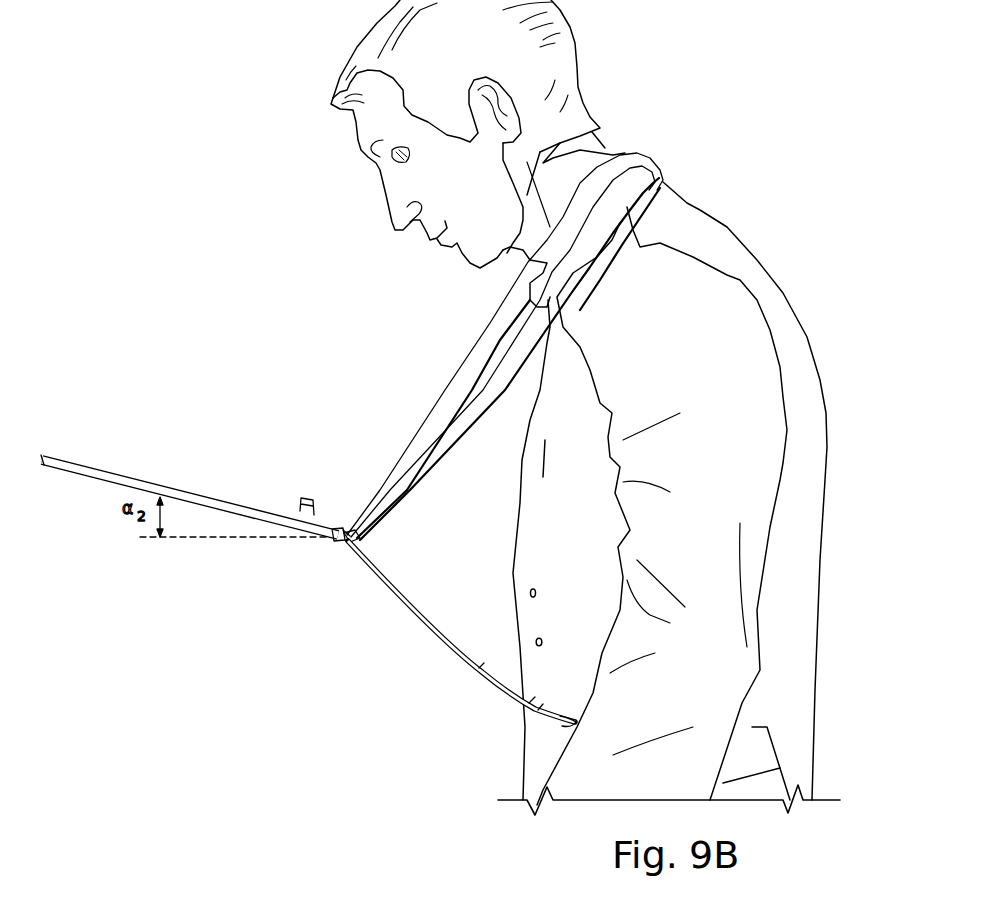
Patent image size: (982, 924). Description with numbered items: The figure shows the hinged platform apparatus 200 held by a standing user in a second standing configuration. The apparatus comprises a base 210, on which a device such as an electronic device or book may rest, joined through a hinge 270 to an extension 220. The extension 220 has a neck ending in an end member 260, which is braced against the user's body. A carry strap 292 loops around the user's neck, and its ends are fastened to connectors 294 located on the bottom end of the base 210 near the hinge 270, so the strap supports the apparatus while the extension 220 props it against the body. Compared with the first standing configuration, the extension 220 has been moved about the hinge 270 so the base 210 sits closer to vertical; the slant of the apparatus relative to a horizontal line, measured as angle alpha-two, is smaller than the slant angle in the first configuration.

The hinged platform apparatus 200 is at (137, 348).
The base 210 is at (92, 478).
The extension 220 is at (387, 608).
The end member 260 is at (558, 726).
The hinge 270 is at (340, 540).
The carry strap 292 is at (455, 387).
The connectors 294 is at (355, 540).